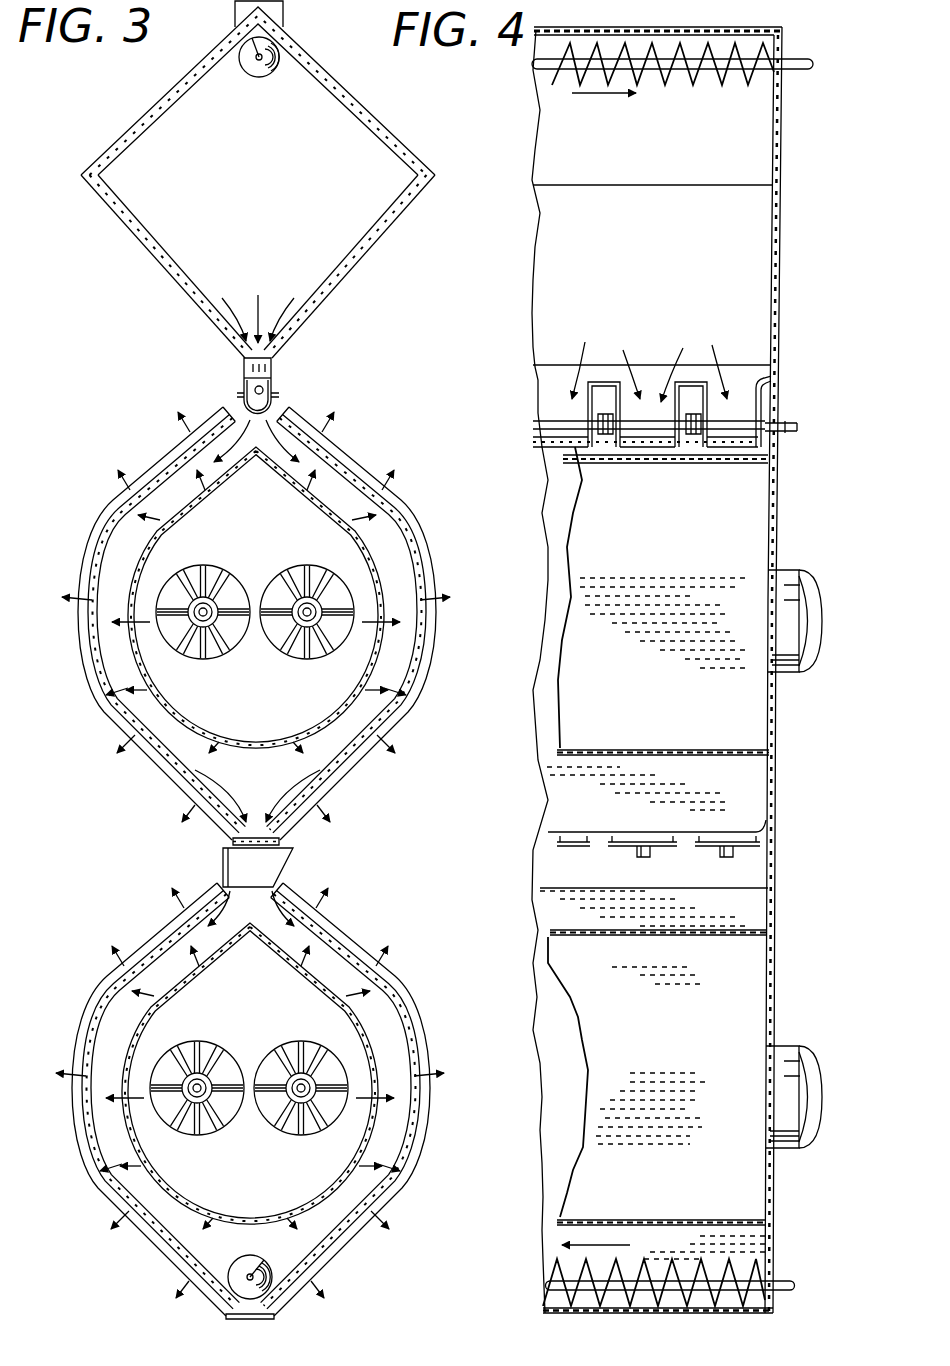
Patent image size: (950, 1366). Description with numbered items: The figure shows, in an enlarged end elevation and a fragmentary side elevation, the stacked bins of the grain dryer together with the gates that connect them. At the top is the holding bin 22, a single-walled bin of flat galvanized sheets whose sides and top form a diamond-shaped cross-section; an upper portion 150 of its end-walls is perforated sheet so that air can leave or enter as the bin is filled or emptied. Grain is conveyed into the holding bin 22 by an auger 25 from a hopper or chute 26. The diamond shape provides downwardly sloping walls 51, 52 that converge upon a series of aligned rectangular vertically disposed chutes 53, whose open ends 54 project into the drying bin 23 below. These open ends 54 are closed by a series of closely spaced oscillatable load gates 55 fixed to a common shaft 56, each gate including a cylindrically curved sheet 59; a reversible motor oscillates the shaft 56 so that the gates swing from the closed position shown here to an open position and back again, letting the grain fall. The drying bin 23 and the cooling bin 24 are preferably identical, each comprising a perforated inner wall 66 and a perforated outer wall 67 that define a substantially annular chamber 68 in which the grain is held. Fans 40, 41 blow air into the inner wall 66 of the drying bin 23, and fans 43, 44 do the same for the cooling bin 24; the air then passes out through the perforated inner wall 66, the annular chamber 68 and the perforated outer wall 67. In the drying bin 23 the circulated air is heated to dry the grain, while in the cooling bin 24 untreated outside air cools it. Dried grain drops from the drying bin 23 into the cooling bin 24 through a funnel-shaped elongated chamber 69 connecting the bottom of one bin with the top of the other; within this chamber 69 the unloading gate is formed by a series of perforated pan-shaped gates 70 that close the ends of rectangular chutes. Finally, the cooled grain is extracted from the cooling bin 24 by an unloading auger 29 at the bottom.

In FIG. 3, the holding bin 22 is at (364, 112).
In FIG. 3, the drying bin 23 is at (357, 455).
In FIG. 3, the cooling bin 24 is at (358, 940).
In FIG. 3, the auger 25 is at (247, 64).
In FIG. 3, the hopper or chute 26 is at (284, 14).
In FIG. 3, the unloading auger 29 is at (245, 1258).
In FIG. 3, the fan 40 is at (325, 573).
In FIG. 3, the fan 41 is at (233, 567).
In FIG. 4, the fan 41 is at (808, 600).
In FIG. 3, the fan 43 is at (311, 1045).
In FIG. 3, the fan 44 is at (223, 1044).
In FIG. 4, the fan 44 is at (811, 1076).
In FIG. 3, the downwardly sloping wall 51 is at (170, 267).
In FIG. 3, the downwardly sloping wall 52 is at (363, 250).
In FIG. 3, the chute 53 is at (276, 384).
In FIG. 4, the chute 53 is at (553, 395).
In FIG. 4, the open end 54 is at (702, 465).
In FIG. 4, the oscillatable load gate 55 is at (627, 445).
In FIG. 4, the common shaft 56 is at (781, 428).
In FIG. 3, the cylindrically curved sheet 59 is at (262, 422).
In FIG. 3, the perforated inner wall 66 is at (385, 590).
In FIG. 3, the perforated outer wall 67 is at (429, 667).
In FIG. 3, the annular chamber 68 is at (414, 700).
In FIG. 3, the funnel-shaped elongated chamber 69 is at (292, 868).
In FIG. 4, the funnel-shaped elongated chamber 69 is at (743, 869).
In FIG. 3, the perforated pan-shaped gate 70 is at (240, 852).
In FIG. 4, the upper portion of bin end-walls 150 is at (784, 127).